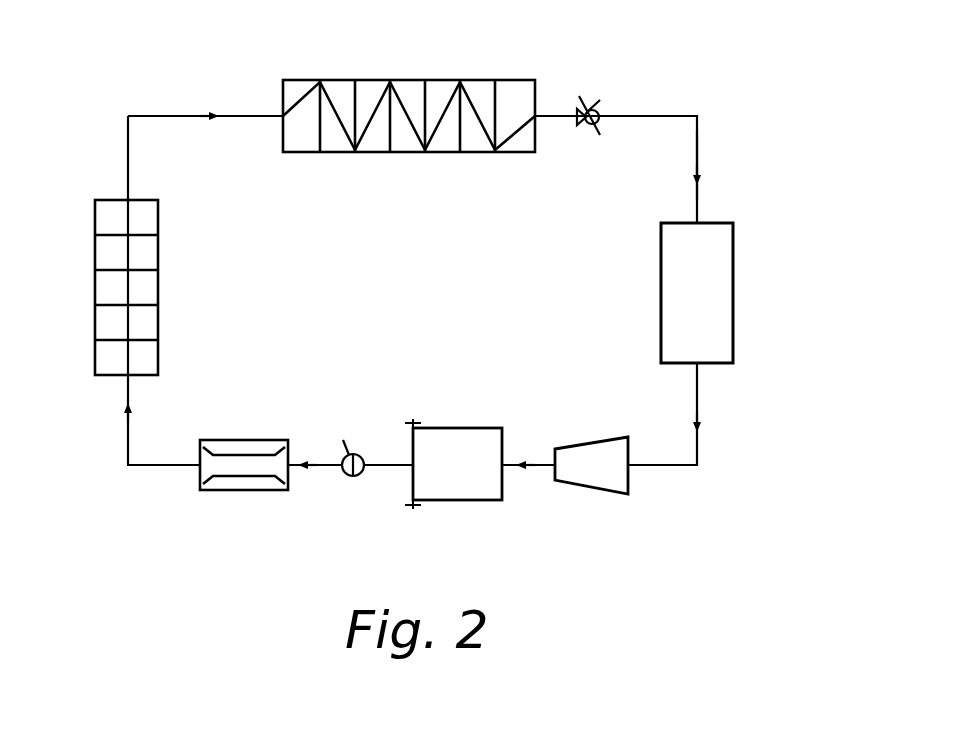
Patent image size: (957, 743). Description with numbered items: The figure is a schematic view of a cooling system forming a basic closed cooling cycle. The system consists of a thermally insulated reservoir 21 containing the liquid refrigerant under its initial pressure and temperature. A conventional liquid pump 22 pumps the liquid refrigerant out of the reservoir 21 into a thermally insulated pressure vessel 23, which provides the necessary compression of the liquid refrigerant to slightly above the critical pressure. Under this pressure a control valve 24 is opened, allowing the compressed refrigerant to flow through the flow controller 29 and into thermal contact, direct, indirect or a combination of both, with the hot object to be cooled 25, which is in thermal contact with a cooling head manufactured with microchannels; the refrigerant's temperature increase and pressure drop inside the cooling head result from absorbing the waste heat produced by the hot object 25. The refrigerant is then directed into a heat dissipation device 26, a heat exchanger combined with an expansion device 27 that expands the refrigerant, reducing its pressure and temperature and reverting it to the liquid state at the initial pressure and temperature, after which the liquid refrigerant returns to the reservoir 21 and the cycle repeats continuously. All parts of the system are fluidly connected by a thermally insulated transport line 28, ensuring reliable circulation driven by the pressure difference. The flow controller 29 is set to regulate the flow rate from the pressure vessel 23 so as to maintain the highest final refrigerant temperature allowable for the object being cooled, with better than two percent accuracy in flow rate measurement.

The thermally insulated reservoir 21 is at (747, 290).
The liquid pump 22 is at (592, 487).
The thermally insulated pressure vessel 23 is at (465, 498).
The control valve 24 is at (343, 438).
The hot object to be cooled 25 is at (97, 308).
The heat dissipation device 26 is at (370, 80).
The expansion device 27 is at (580, 91).
The thermally insulated transport line 28 is at (702, 155).
The flow controller 29 is at (238, 490).